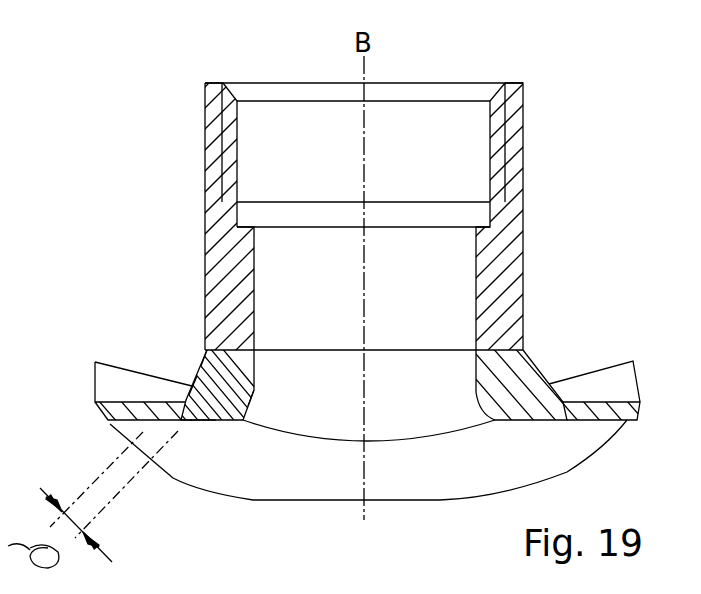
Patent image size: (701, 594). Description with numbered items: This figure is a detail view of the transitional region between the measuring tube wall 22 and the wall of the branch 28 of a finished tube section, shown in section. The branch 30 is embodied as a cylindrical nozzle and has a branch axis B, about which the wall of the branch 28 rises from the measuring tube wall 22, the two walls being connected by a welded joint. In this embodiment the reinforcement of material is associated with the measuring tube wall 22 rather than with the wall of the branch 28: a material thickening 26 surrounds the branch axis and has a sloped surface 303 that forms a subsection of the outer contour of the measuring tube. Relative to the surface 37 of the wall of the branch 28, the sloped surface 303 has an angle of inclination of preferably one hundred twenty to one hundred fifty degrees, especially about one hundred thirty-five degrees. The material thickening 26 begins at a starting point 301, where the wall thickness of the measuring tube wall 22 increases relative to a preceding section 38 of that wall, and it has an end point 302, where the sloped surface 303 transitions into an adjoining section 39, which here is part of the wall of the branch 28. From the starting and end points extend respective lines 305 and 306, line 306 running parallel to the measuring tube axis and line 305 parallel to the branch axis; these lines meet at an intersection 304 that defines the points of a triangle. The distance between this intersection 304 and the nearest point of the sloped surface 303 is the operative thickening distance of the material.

The measuring tube wall 22 is at (545, 383).
The material thickening 26 is at (202, 388).
The wall of the branch 28 is at (512, 160).
The branch 30 is at (350, 297).
The surface of the wall of the branch 37 is at (206, 110).
The preceding section 38 is at (107, 410).
The adjoining section 39 is at (212, 228).
The starting point 301 is at (190, 400).
The end point 302 is at (206, 375).
The sloped surface 303 is at (184, 423).
The intersection 304 is at (192, 426).
The line 305 is at (207, 430).
The line 306 is at (248, 404).